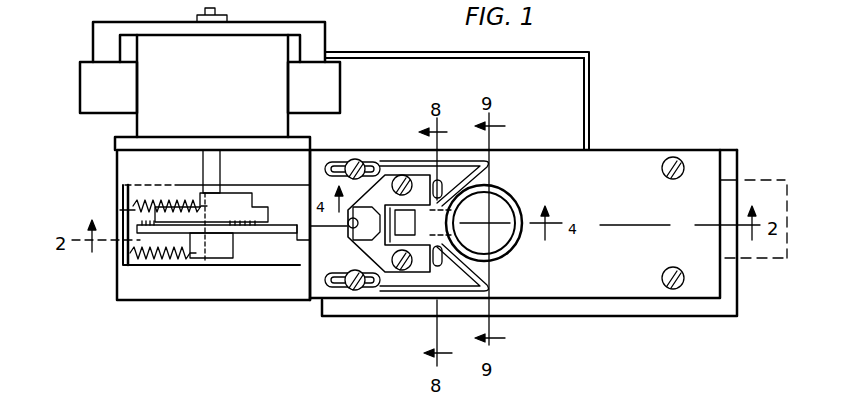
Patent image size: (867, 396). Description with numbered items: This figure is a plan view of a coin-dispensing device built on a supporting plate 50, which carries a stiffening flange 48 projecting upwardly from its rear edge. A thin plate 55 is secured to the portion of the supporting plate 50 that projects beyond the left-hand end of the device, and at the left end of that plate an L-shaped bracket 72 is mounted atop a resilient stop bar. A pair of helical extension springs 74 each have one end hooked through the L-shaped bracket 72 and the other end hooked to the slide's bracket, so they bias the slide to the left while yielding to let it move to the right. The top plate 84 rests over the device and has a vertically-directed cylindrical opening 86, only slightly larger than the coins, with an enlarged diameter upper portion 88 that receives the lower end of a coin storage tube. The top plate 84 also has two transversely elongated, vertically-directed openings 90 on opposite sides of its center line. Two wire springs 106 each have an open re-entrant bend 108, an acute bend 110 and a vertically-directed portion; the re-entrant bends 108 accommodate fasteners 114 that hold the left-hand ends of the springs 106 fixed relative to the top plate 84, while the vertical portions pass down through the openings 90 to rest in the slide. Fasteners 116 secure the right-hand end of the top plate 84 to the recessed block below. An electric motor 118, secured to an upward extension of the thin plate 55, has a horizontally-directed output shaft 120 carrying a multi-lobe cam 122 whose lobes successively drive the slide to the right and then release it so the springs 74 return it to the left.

The stiffening flange 48 is at (559, 52).
The supporting plate 50 is at (589, 102).
The thin plate 55 is at (172, 299).
The L-shaped bracket 72 is at (120, 210).
The helical extension springs 74 is at (135, 203).
The top plate 84 is at (632, 156).
The cylindrical opening 86 is at (505, 243).
The enlarged diameter upper portion 88 is at (500, 262).
The vertically-directed openings 90 is at (442, 183).
The springs 106 is at (405, 292).
The open re-entrant bend 108 is at (323, 295).
The acute bend 110 is at (488, 296).
The fasteners 114 is at (358, 160).
The fasteners 116 is at (678, 160).
The electric motor 118 is at (256, 97).
The output shaft 120 is at (222, 172).
The multi-lobe cam 122 is at (258, 235).